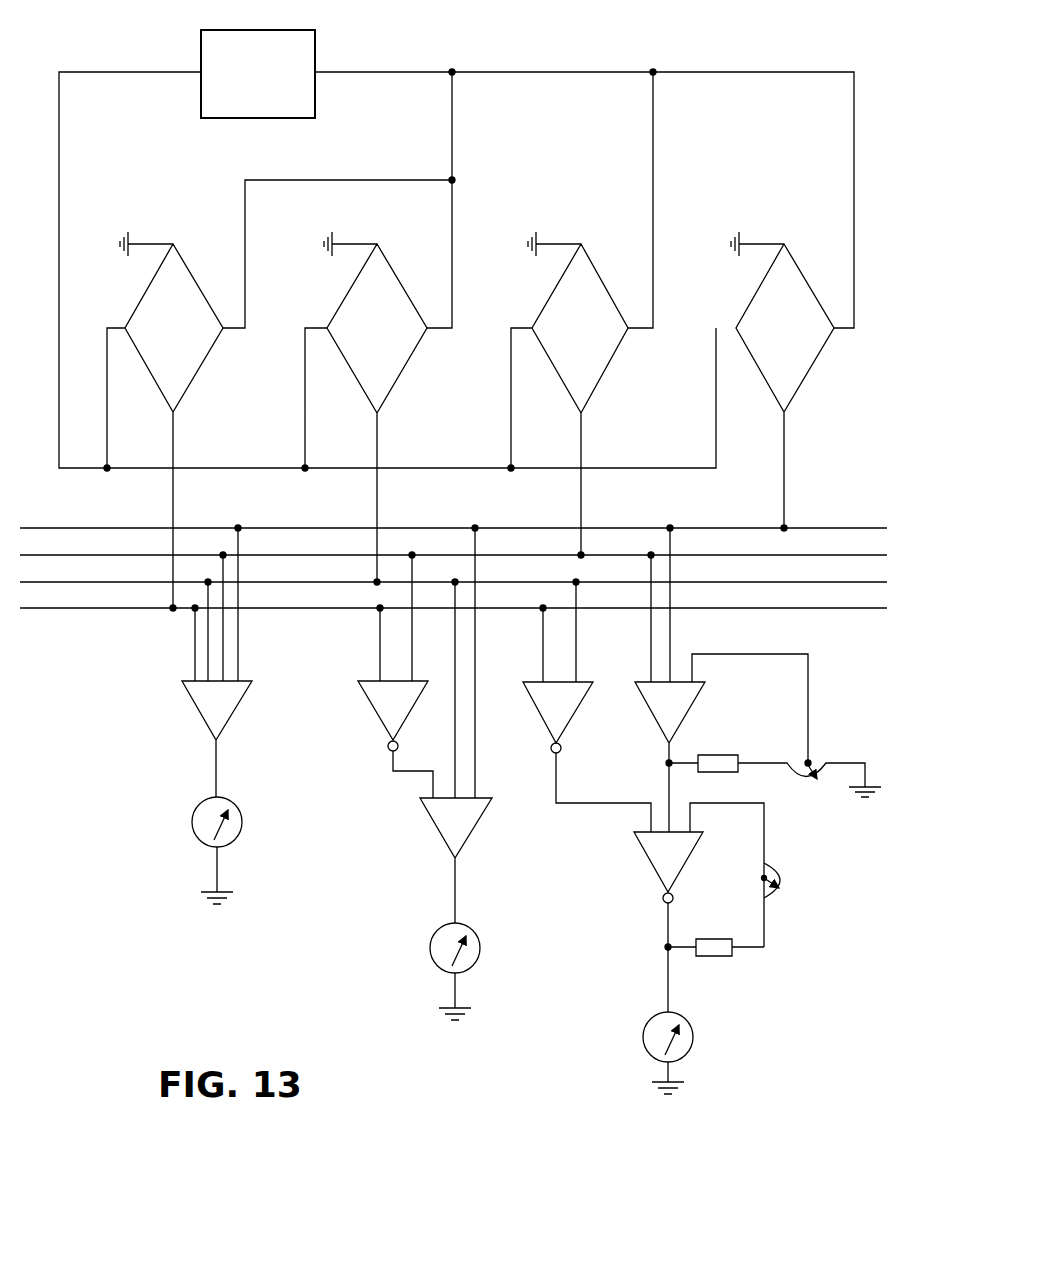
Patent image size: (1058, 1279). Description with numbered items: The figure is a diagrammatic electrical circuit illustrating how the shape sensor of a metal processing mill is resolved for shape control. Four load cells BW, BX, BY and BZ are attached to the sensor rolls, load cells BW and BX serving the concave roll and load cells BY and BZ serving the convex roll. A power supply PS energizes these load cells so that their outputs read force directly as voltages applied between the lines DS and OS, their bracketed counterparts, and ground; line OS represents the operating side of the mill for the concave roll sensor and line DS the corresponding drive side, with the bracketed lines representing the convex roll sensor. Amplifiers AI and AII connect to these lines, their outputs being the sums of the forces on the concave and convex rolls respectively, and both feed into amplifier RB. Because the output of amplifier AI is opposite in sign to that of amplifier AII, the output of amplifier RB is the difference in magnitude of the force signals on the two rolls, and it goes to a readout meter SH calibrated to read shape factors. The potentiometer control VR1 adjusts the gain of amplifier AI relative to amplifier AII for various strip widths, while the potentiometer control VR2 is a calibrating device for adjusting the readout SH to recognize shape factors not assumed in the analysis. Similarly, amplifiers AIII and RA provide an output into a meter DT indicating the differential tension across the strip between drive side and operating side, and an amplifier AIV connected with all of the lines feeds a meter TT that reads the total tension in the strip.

The power supply PS is at (271, 84).
The load cell BZ is at (197, 385).
The load cell BY is at (398, 385).
The load cell BX is at (600, 385).
The load cell BW is at (802, 385).
The drive side line DS is at (453, 544).
The operating side line OS is at (453, 571).
The amplifier AIV is at (258, 700).
The amplifier AIII is at (384, 710).
The amplifier AII is at (544, 704).
The amplifier AI is at (654, 704).
The amplifier RA is at (438, 820).
The amplifier RB is at (660, 866).
The meter TT is at (200, 810).
The meter DT is at (435, 942).
The readout meter SH is at (652, 1018).
The potentiometer control VR1 is at (798, 762).
The potentiometer control VR2 is at (784, 879).